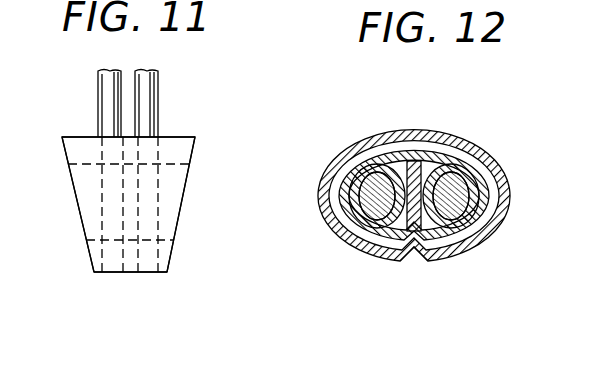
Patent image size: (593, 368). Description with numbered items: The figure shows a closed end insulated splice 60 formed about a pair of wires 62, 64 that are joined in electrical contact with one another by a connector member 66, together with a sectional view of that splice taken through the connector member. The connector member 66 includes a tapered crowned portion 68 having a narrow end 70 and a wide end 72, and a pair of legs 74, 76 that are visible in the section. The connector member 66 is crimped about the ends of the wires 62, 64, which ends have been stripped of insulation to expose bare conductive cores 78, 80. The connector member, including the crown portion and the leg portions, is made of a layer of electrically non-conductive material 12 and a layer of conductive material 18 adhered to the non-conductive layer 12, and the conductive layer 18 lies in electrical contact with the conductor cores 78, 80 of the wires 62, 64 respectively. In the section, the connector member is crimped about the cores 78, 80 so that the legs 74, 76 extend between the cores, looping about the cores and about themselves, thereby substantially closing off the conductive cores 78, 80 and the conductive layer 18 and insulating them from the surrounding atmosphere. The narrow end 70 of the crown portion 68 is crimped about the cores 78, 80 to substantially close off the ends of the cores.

In FIG. 11, the layer of electrically non-conductive material 12 is at (27, 173).
In FIG. 12, the layer of electrically non-conductive material 12 is at (453, 143).
In FIG. 12, the layer of conductive material 18 is at (470, 148).
In FIG. 11, the closed end insulated splice 60 is at (61, 261).
In FIG. 11, the wire 62 is at (103, 95).
In FIG. 11, the wire 64 is at (147, 98).
In FIG. 11, the connector member 66 is at (207, 151).
In FIG. 11, the tapered crowned portion 68 is at (83, 187).
In FIG. 12, the tapered crowned portion 68 is at (398, 130).
In FIG. 11, the narrow end 70 is at (125, 273).
In FIG. 12, the narrow end 70 is at (413, 270).
In FIG. 11, the wide end 72 is at (180, 135).
In FIG. 12, the leg 74 is at (343, 240).
In FIG. 12, the leg 76 is at (503, 230).
In FIG. 12, the conductive core 78 is at (362, 253).
In FIG. 12, the conductive core 80 is at (443, 253).